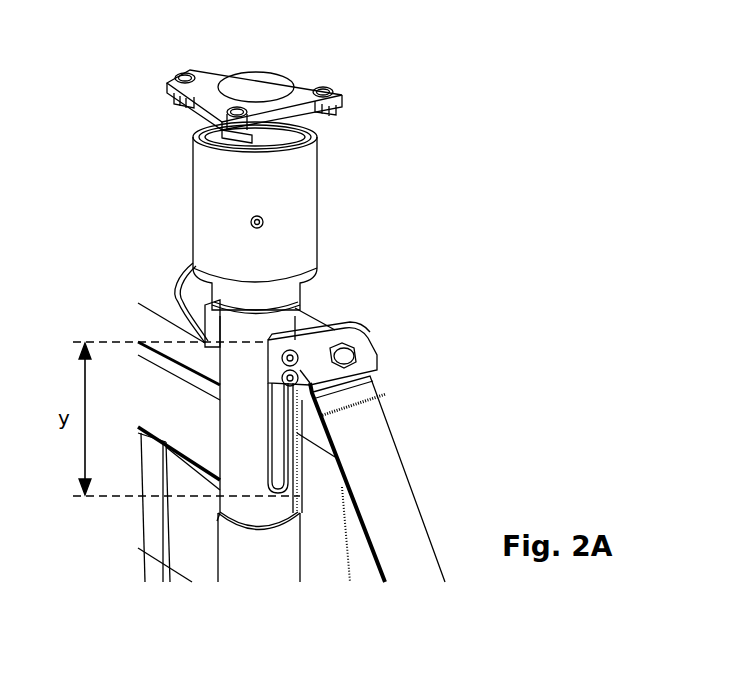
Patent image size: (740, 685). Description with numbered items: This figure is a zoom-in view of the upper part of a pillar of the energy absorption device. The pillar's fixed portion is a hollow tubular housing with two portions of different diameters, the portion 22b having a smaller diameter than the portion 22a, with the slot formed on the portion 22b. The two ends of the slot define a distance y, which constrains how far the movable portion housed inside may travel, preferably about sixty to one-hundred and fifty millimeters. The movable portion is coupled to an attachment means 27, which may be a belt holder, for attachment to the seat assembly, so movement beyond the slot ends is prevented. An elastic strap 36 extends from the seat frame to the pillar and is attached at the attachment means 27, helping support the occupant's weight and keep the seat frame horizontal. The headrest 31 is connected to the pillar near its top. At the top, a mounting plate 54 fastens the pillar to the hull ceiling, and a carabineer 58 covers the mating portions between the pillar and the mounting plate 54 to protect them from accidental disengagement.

The mounting plate 54 is at (308, 90).
The carabineer 58 is at (295, 223).
The headrest 31 is at (137, 163).
The attachment means 27 is at (307, 358).
The elastic strap 36 is at (393, 477).
The portion of fixed portion 22a is at (281, 579).
The portion of fixed portion 22b is at (264, 391).